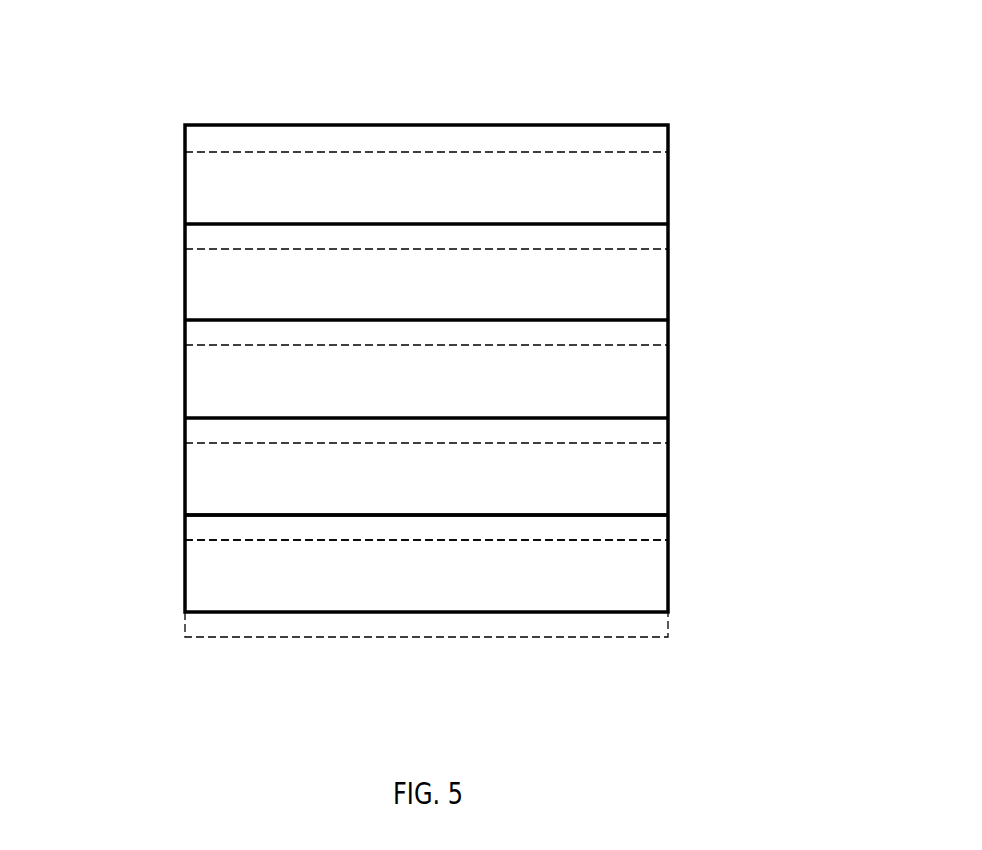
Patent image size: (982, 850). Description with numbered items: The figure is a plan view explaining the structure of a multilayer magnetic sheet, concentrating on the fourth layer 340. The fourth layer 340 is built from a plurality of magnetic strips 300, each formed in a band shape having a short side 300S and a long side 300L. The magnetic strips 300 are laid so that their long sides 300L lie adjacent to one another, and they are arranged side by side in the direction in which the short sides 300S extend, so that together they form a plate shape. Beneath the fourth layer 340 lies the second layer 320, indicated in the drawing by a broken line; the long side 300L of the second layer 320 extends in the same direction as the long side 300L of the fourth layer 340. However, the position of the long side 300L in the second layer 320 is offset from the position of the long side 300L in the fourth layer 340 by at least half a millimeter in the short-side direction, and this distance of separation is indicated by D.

The fourth layer 340 is at (165, 105).
The magnetic strip 300 is at (637, 180).
The long side 300L is at (265, 513).
The short side 300S is at (185, 594).
The distance of separation D is at (185, 540).
The second layer 320 is at (688, 655).